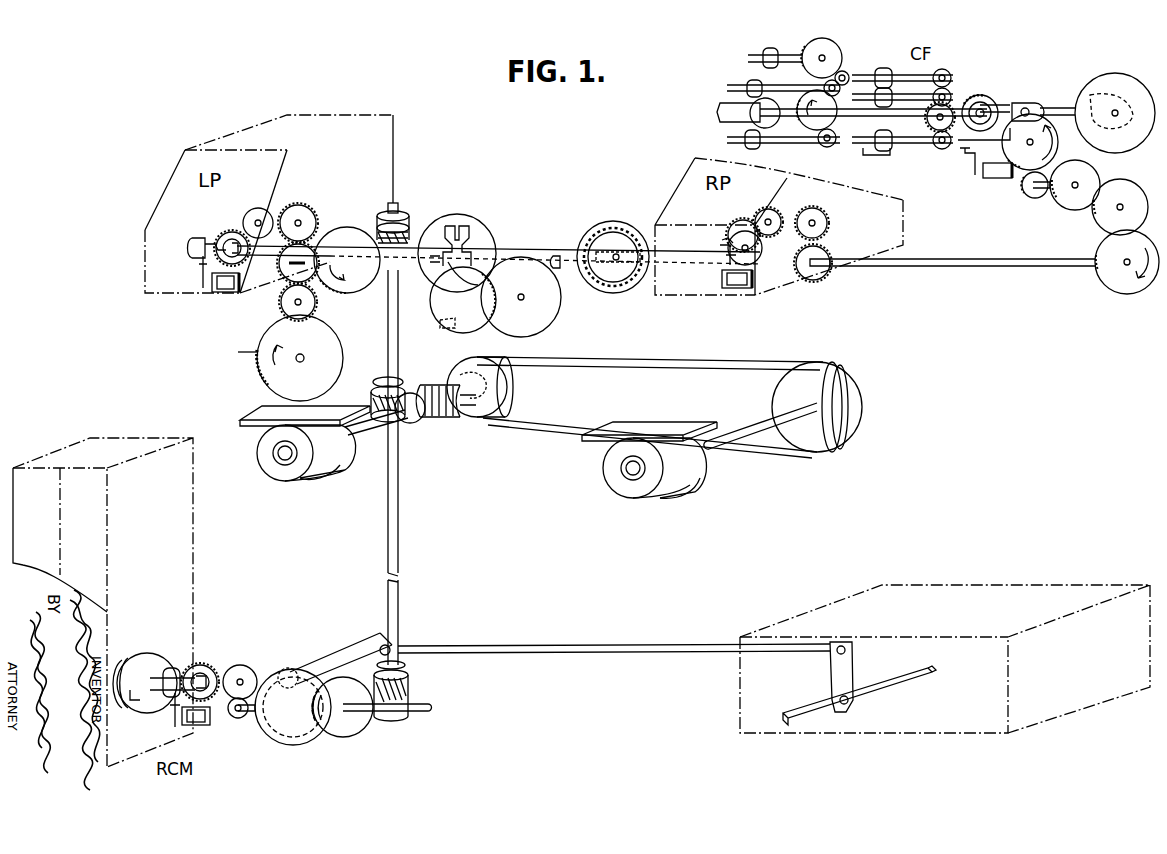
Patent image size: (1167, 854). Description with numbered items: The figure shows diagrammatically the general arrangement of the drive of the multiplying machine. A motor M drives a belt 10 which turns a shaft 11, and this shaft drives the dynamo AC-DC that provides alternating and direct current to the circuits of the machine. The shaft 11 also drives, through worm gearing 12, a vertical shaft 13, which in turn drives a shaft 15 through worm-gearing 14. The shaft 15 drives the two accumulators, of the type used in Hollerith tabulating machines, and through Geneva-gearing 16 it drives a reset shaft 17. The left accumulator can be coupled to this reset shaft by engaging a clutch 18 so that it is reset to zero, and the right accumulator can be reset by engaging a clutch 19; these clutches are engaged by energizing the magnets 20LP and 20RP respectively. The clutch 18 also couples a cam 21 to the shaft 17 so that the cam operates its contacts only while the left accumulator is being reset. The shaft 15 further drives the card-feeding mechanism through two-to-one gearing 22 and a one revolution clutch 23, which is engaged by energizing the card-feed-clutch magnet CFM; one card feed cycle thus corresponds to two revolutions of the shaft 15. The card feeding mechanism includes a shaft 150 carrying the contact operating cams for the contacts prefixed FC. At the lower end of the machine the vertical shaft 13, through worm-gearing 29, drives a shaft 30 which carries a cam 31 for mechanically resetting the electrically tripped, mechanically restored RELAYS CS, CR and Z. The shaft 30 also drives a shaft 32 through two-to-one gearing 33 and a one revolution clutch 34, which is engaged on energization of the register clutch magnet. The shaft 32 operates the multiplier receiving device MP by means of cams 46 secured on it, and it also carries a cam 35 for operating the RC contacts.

The belt 10 is at (632, 362).
The shaft 11 is at (380, 420).
The worm gearing 12 is at (427, 392).
The vertical shaft 13 is at (398, 482).
The worm-gearing 14 is at (412, 228).
The shaft 15 is at (375, 268).
The Geneva-gearing 16 is at (510, 270).
The reset shaft 17 is at (338, 247).
The clutch 18 is at (232, 232).
The clutch 19 is at (726, 232).
The magnet 20LP is at (227, 282).
The magnet 20RP is at (742, 283).
The cam 21 is at (192, 247).
The 2:1 gearing 22 is at (1027, 157).
The one revolution clutch 23 is at (972, 100).
The worm-gearing 29 is at (385, 722).
The shaft 30 is at (420, 720).
The cam 31 is at (310, 740).
The shaft 32 is at (175, 668).
The 2:1 gearing 33 is at (252, 678).
The one revolution clutch 34 is at (203, 672).
The cam 35 is at (140, 705).
The cams 46 is at (143, 655).
The shaft 150 is at (800, 46).
The card-feed-clutch magnet CFM is at (996, 178).
The dynamo AC-DC is at (335, 455).
The motor M is at (675, 470).
The multiplier receiving device MP is at (103, 602).
The relays CS, CR and Z RELAYS is at (945, 659).